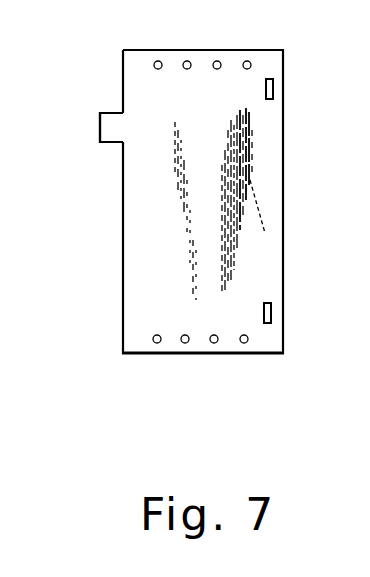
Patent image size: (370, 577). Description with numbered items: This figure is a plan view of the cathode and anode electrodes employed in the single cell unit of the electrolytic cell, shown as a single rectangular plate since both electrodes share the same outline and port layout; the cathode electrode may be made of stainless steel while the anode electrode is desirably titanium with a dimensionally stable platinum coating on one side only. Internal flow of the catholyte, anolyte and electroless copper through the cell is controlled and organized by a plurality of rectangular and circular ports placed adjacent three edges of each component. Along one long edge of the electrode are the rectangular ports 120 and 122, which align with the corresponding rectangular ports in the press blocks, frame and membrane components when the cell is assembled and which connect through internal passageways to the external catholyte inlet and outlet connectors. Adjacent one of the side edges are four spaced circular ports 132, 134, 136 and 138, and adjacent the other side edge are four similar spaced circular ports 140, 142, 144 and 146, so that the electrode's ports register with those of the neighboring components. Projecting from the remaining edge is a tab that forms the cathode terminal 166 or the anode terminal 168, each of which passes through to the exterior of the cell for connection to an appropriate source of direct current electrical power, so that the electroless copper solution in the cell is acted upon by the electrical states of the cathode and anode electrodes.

The rectangular port 120 is at (273, 85).
The rectangular port 122 is at (271, 309).
The circular port 132 is at (154, 343).
The circular port 134 is at (185, 344).
The circular port 136 is at (217, 344).
The circular port 138 is at (247, 343).
The circular port 140 is at (155, 61).
The circular port 142 is at (187, 61).
The circular port 144 is at (220, 61).
The circular port 146 is at (251, 62).
The cathode terminal 166 is at (100, 130).
The anode terminal 168 is at (85, 143).